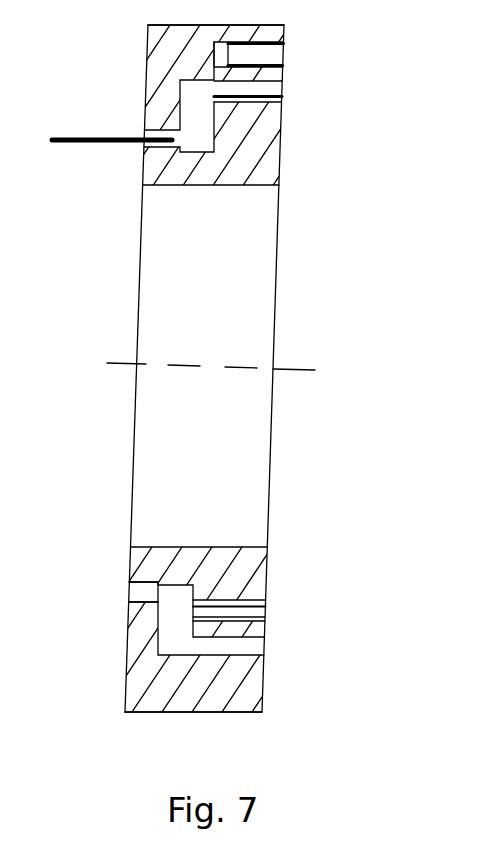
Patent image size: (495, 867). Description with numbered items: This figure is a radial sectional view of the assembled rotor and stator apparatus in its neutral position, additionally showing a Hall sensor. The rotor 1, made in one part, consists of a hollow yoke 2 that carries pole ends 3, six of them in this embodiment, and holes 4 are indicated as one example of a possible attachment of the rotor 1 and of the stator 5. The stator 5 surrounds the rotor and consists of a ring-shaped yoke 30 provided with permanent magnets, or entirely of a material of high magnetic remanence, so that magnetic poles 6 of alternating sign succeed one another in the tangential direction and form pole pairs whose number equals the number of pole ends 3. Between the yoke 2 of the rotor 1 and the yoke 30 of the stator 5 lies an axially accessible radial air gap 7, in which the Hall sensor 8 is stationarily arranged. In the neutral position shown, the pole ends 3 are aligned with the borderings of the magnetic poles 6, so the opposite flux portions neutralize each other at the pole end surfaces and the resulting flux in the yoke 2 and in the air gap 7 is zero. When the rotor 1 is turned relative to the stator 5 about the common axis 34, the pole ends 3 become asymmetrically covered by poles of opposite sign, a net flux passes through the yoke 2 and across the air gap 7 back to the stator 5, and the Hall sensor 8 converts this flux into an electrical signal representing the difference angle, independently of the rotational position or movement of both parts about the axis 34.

The rotor 1 is at (285, 152).
The yoke 2 is at (283, 172).
The pole ends 3 is at (285, 119).
The holes 4 is at (285, 57).
The stator 5 is at (147, 50).
The magnetic poles 6 is at (285, 91).
The air gap 7 is at (125, 590).
The Hall sensor 8 is at (128, 130).
The yoke 30 is at (263, 685).
The axis 34 is at (282, 371).